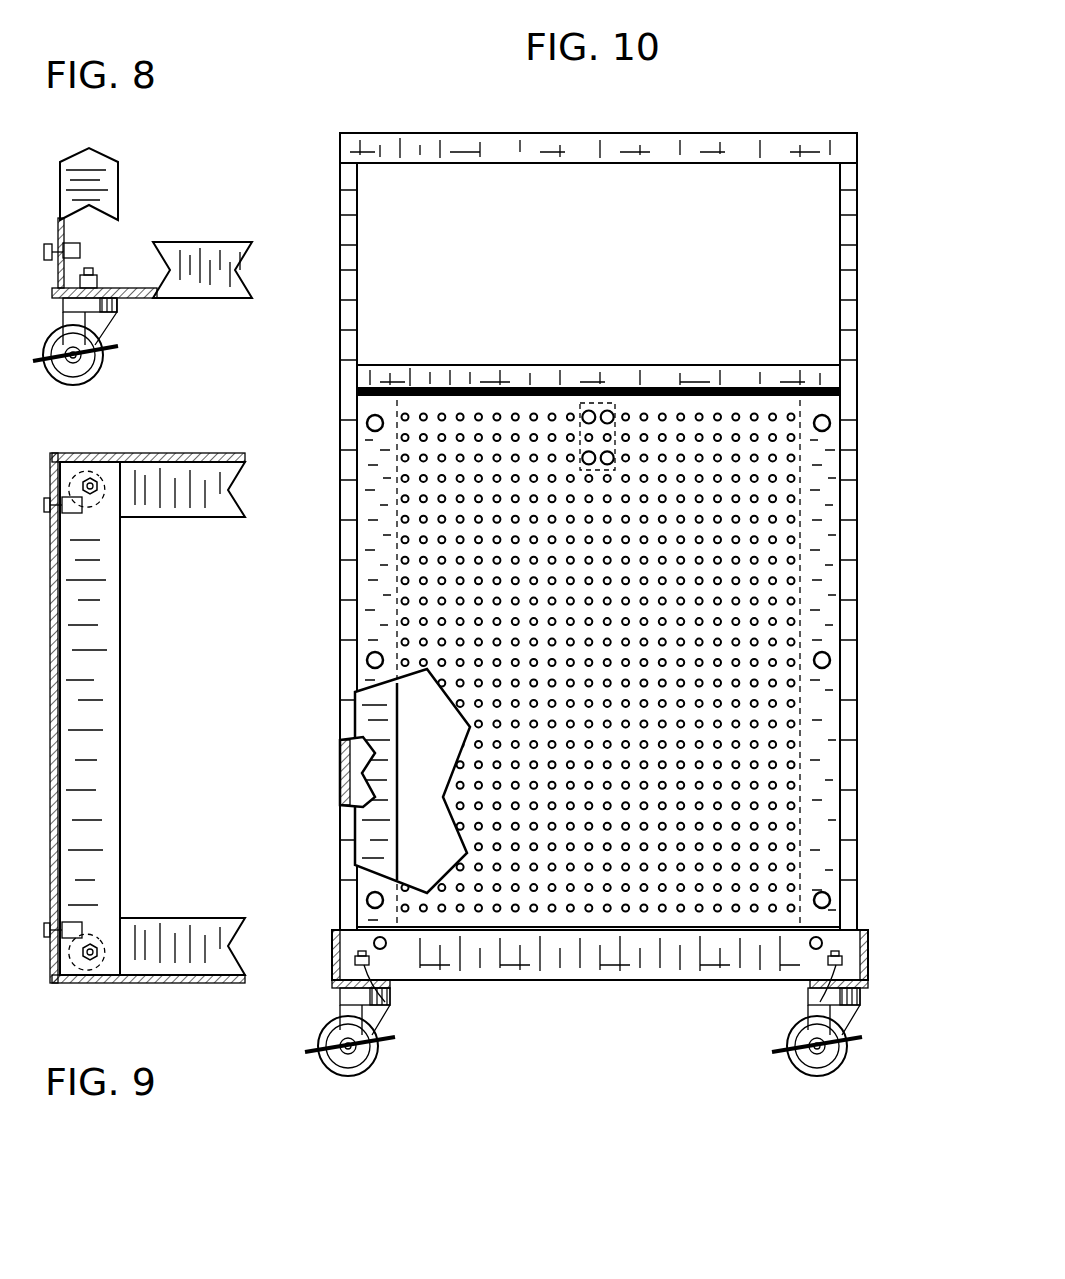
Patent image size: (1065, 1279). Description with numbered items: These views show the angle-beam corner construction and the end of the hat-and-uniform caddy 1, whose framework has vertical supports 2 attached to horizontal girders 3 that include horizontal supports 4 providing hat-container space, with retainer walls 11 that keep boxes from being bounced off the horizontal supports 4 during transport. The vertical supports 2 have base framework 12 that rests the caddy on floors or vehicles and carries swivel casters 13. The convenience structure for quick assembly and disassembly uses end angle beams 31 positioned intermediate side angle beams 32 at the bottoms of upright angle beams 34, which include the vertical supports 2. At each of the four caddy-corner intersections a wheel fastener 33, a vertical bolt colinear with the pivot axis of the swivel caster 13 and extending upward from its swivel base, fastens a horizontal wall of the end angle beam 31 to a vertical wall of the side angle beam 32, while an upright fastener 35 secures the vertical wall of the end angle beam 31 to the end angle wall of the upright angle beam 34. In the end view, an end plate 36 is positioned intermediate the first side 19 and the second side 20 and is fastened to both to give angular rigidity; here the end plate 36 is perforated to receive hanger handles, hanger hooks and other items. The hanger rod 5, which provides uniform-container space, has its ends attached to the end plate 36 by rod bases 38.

In FIG. 10, the hat-and-uniform caddy 1 is at (776, 78).
In FIG. 10, the vertical supports 2 is at (348, 448).
In FIG. 10, the horizontal girders 3 is at (442, 150).
In FIG. 10, the horizontal supports 4 is at (475, 158).
In FIG. 10, the hanger rod 5 is at (588, 414).
In FIG. 10, the retainer walls 11 is at (510, 150).
In FIG. 8, the base framework 12 is at (158, 324).
In FIG. 9, the base framework 12 is at (90, 1008).
In FIG. 10, the base framework 12 is at (282, 1022).
In FIG. 8, the swivel caster 13 is at (95, 360).
In FIG. 9, the swivel caster 13 is at (105, 505).
In FIG. 10, the swivel caster 13 is at (345, 1052).
In FIG. 10, the first side 19 is at (343, 656).
In FIG. 10, the second side 20 is at (857, 712).
In FIG. 8, the end angle beam 31 is at (110, 288).
In FIG. 9, the end angle beam 31 is at (95, 720).
In FIG. 10, the end angle beam 31 is at (575, 968).
In FIG. 8, the side angle beam 32 is at (210, 252).
In FIG. 9, the side angle beam 32 is at (200, 470).
In FIG. 10, the side angle beam 32 is at (334, 955).
In FIG. 8, the wheel fastener 33 is at (95, 268).
In FIG. 9, the wheel fastener 33 is at (95, 482).
In FIG. 10, the wheel fastener 33 is at (392, 1005).
In FIG. 8, the upright angle beam 34 is at (92, 187).
In FIG. 9, the upright angle beam 34 is at (56, 462).
In FIG. 10, the upright angle beam 34 is at (340, 772).
In FIG. 8, the upright fastener 35 is at (58, 232).
In FIG. 9, the upright fastener 35 is at (72, 512).
In FIG. 10, the upright fastener 35 is at (376, 940).
In FIG. 10, the end plate 36 is at (450, 590).
In FIG. 10, the rod bases 38 is at (605, 414).